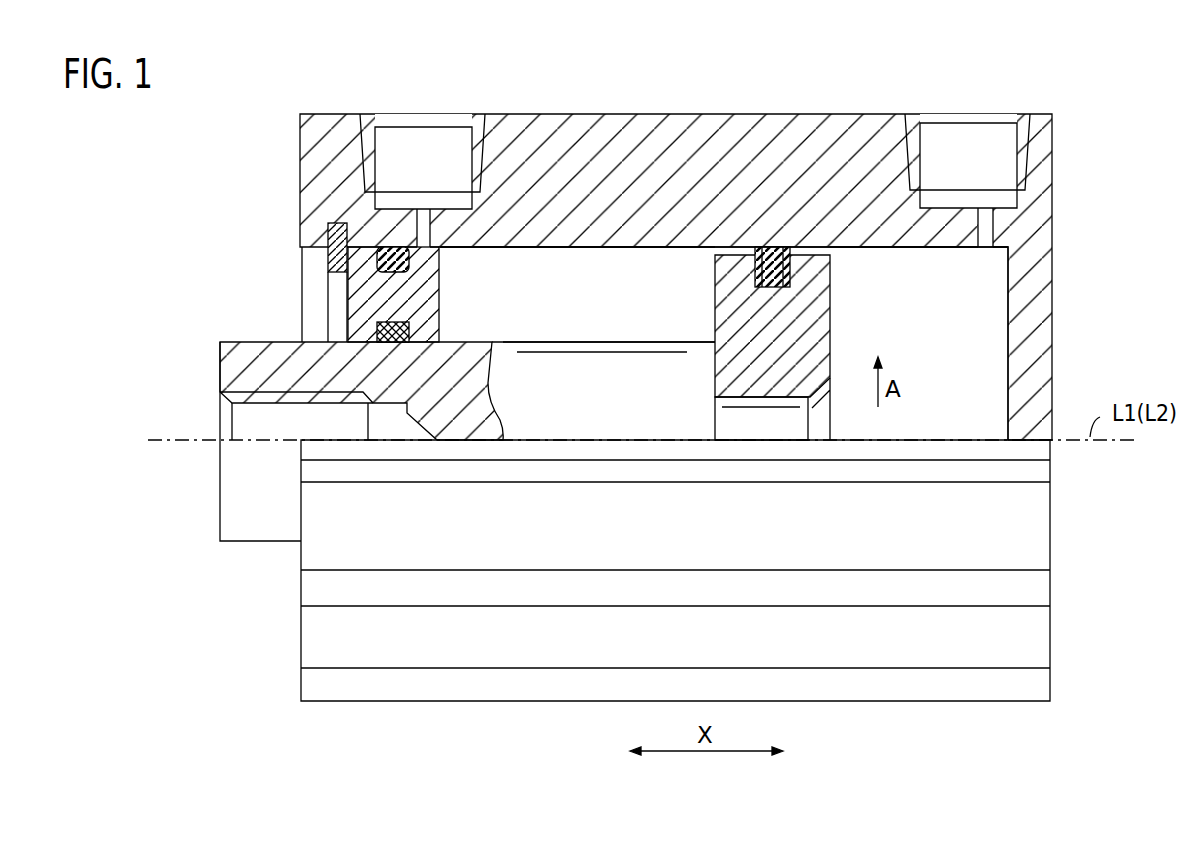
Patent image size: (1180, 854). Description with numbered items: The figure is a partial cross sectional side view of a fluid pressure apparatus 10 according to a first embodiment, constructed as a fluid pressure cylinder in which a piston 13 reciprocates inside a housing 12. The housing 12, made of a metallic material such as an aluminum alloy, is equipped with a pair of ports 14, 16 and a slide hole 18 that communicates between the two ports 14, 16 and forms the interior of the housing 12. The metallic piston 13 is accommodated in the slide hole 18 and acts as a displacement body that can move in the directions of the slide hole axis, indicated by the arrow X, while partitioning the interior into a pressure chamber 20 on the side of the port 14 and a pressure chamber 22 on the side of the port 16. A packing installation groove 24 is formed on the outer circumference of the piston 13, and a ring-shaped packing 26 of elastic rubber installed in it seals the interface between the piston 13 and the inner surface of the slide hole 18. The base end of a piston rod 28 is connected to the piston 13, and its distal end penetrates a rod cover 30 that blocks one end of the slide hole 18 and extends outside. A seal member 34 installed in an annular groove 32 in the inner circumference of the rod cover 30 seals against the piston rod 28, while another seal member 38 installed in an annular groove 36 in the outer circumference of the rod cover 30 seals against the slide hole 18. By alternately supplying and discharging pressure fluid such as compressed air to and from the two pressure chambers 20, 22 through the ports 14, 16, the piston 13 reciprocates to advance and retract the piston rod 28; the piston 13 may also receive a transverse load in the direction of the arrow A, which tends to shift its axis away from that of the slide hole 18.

The fluid pressure apparatus 10 is at (739, 56).
The housing 12 is at (584, 127).
The piston 13 is at (727, 376).
The port 14 is at (424, 138).
The port 16 is at (975, 140).
The slide hole 18 is at (530, 247).
The pressure chamber 20 is at (639, 277).
The pressure chamber 22 is at (853, 277).
The packing installation groove 24 is at (768, 288).
The packing 26 is at (758, 247).
The piston rod 28 is at (238, 352).
The rod cover 30 is at (362, 296).
The annular groove 32 is at (380, 332).
The seal member 34 is at (408, 327).
The annular groove 36 is at (350, 257).
The seal member 38 is at (410, 263).